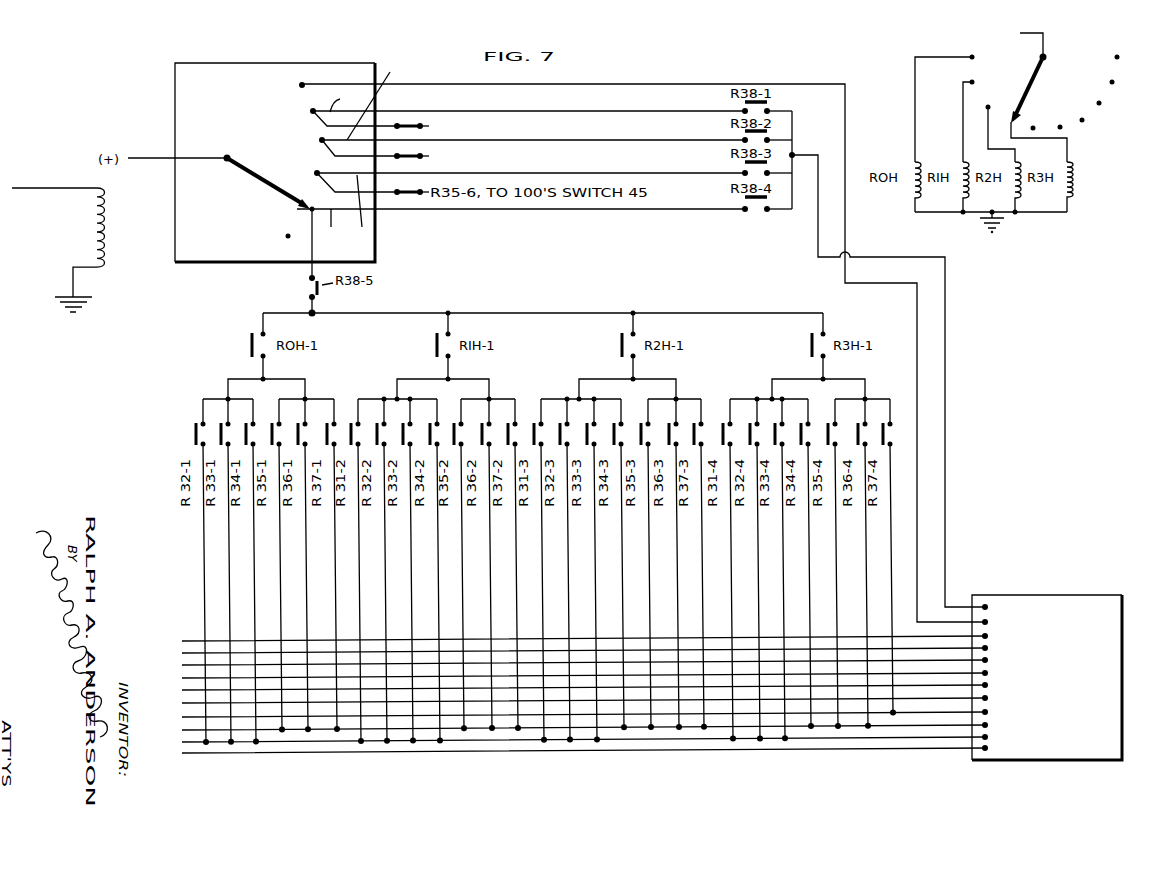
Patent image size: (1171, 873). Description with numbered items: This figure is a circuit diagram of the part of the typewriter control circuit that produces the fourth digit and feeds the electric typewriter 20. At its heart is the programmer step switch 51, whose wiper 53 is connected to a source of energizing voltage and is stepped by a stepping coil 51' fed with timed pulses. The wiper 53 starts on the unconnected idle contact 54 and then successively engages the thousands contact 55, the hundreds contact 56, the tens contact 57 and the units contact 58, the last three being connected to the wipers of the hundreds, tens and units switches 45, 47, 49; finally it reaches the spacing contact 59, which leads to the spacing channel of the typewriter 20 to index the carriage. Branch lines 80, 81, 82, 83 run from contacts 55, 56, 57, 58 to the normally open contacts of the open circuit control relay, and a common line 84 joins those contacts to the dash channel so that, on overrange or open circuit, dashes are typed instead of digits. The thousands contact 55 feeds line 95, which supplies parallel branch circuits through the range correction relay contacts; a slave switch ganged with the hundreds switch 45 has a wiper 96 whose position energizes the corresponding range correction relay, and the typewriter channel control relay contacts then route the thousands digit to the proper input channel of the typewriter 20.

The typewriter 20 is at (1122, 652).
The hundreds switch 45 is at (1017, 94).
The tens switch 47 is at (517, 156).
The units switch 49 is at (524, 126).
The programmer step switch 51 is at (255, 162).
The stepping coil 51' is at (57, 250).
The wiper 53 is at (265, 183).
The idle contact 54 is at (286, 237).
The thousands contact 55 is at (510, 239).
The hundreds contact 56 is at (313, 174).
The tens contact 57 is at (320, 141).
The units contact 58 is at (310, 111).
The spacing contact 59 is at (299, 85).
The branch line 80 is at (331, 229).
The branch line 81 is at (360, 212).
The branch line 82 is at (378, 99).
The branch line 83 is at (343, 103).
The common line 84 is at (897, 246).
The line 95 is at (318, 312).
The wiper 96 is at (1034, 90).